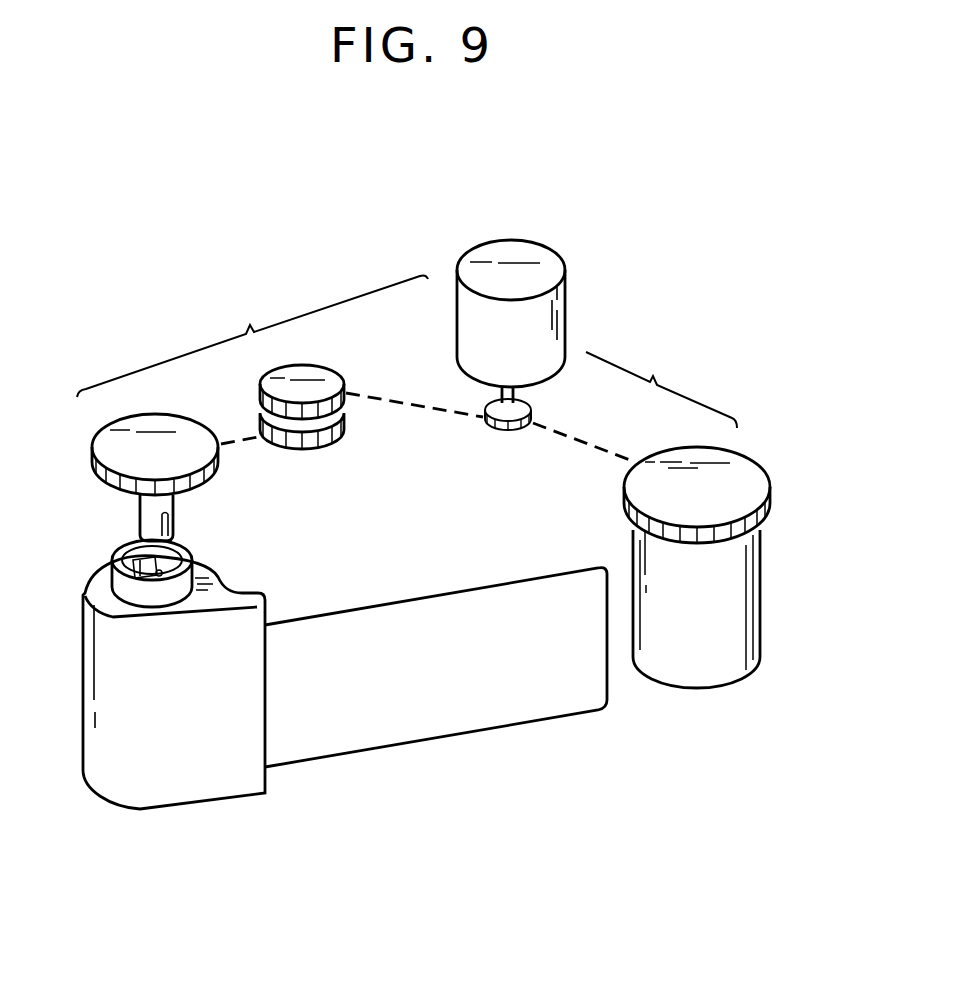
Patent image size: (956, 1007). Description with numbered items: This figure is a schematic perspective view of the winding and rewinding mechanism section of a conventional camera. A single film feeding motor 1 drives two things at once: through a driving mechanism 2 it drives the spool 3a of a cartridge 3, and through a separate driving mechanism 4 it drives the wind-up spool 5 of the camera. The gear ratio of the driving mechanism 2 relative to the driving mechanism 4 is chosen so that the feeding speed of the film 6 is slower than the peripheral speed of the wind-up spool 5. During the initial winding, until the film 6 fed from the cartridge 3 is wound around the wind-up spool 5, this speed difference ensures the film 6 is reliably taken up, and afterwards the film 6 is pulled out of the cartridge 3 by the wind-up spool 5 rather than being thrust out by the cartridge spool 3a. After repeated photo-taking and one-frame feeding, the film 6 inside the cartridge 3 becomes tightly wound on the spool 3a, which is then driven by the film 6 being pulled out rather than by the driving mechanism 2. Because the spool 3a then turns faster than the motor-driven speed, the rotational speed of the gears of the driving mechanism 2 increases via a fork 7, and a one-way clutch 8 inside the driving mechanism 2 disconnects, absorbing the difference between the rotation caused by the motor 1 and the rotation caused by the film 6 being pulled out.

The film feeding motor 1 is at (510, 248).
The driving mechanism 2 is at (252, 336).
The cartridge 3 is at (147, 793).
The spool 3a is at (153, 595).
The driving mechanism 4 is at (661, 386).
The wind-up spool 5 is at (747, 613).
The film 6 is at (457, 723).
The fork 7 is at (148, 515).
The one-way clutch 8 is at (307, 452).